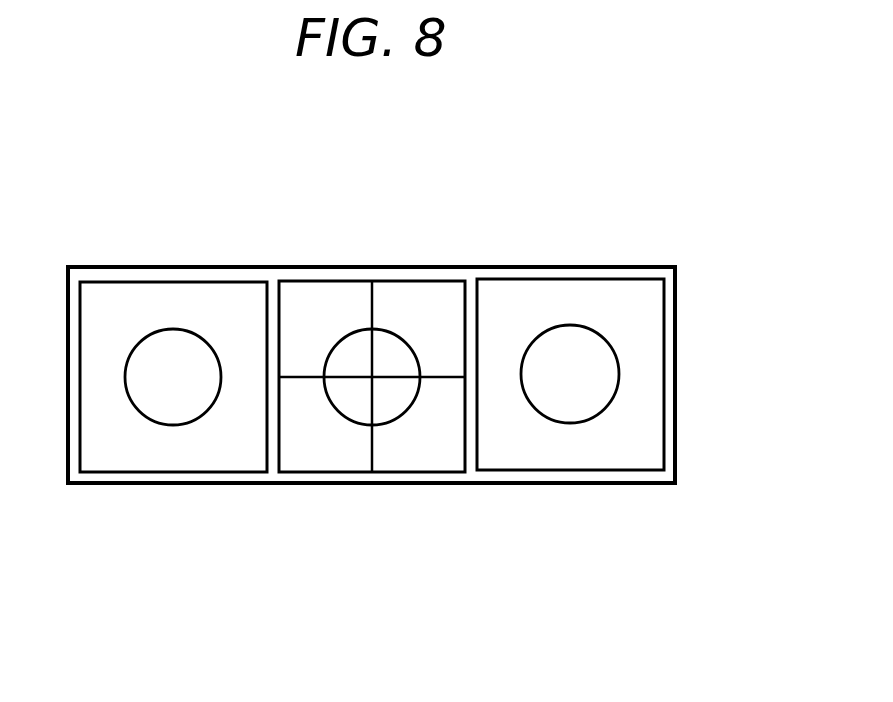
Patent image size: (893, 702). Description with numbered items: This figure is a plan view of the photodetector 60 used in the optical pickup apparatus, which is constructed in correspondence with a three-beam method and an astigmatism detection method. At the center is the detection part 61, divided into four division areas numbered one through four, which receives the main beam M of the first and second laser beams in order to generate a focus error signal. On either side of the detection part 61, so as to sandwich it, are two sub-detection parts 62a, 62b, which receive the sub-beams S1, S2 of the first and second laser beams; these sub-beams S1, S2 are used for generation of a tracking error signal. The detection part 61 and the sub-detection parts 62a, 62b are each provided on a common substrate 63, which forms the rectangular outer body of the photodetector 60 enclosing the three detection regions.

The photodetector 60 is at (497, 160).
The detection part 61 is at (389, 268).
The sub-detection part 62a is at (530, 265).
The sub-detection part 62b is at (172, 267).
The substrate 63 is at (676, 371).
The main beam M is at (368, 425).
The sub-beam S1 is at (558, 423).
The sub-beam S2 is at (162, 425).